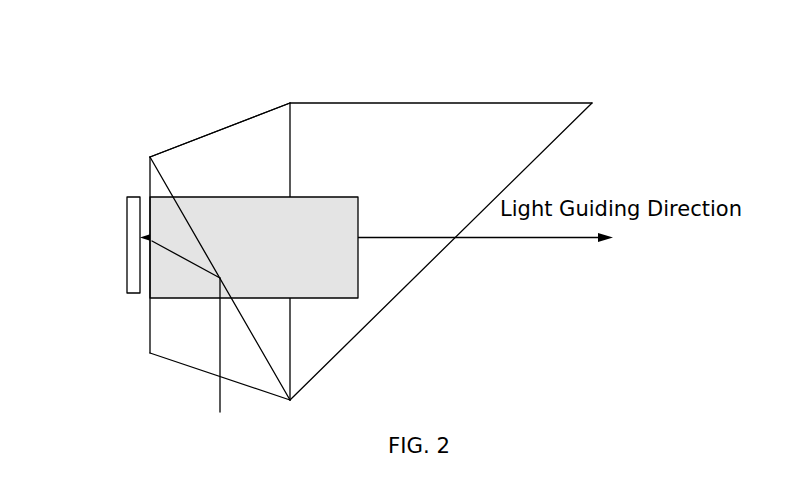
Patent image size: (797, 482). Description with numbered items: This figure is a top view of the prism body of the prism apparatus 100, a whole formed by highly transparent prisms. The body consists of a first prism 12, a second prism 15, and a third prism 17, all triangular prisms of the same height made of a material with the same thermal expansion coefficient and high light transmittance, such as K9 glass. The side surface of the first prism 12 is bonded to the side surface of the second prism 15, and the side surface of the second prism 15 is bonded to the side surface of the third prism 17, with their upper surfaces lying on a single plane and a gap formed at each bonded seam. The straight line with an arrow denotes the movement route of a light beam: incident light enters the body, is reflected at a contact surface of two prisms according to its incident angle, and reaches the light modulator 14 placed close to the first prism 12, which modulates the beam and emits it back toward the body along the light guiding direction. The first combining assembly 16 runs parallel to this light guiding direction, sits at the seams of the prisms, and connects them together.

The prism apparatus 100 is at (343, 98).
The first prism 12 is at (190, 352).
The light modulator 14 is at (135, 197).
The second prism 15 is at (263, 128).
The first combining assembly 16 is at (213, 213).
The third prism 17 is at (485, 138).